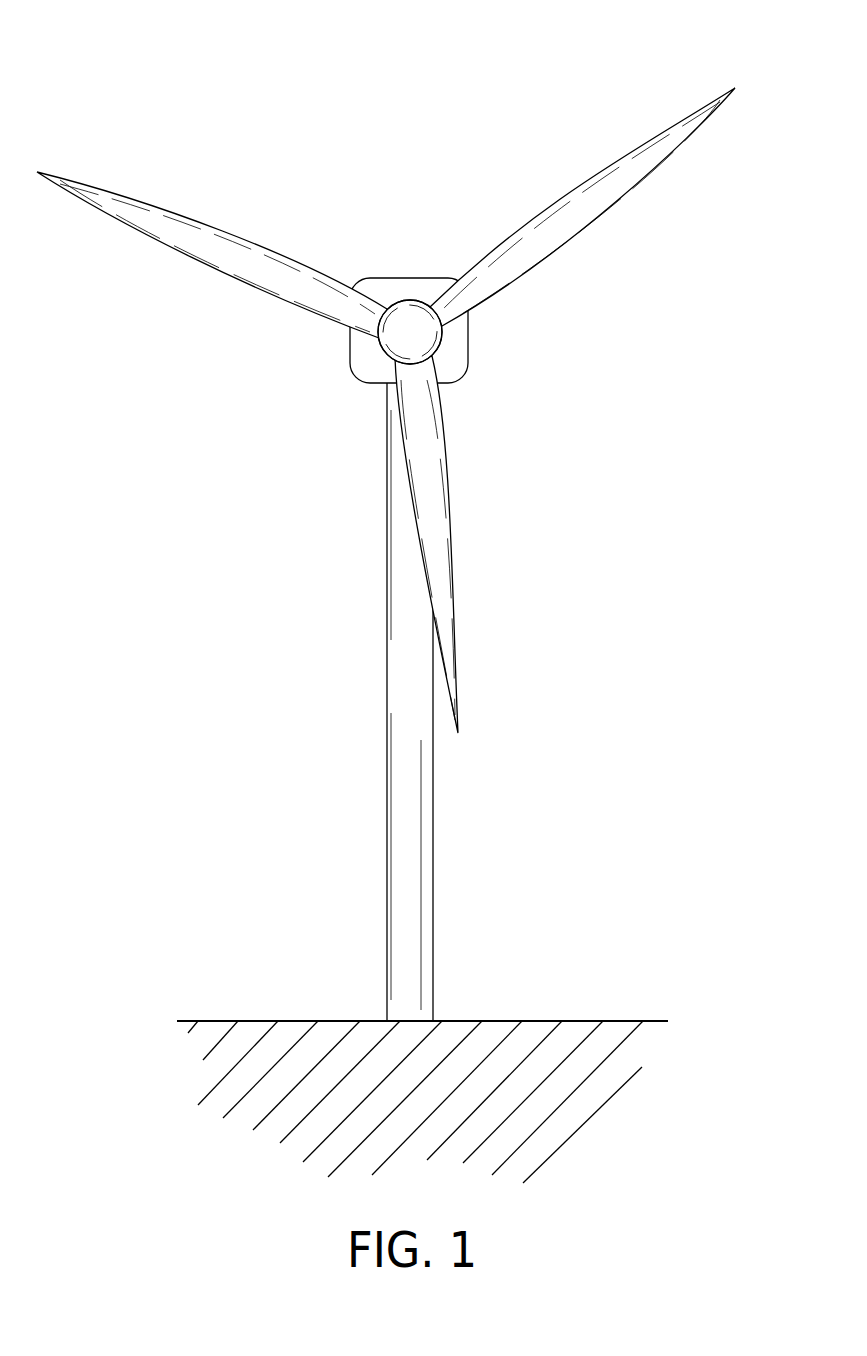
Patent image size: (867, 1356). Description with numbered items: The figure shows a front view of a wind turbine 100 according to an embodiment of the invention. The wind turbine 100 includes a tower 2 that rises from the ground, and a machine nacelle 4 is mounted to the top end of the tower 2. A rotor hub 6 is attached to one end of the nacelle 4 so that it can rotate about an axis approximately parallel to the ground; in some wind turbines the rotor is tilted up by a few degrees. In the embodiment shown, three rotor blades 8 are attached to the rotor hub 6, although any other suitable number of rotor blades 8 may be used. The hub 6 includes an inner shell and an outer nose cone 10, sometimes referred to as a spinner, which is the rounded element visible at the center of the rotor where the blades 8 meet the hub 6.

The wind turbine 100 is at (148, 97).
The tower 2 is at (412, 907).
The machine nacelle 4 is at (363, 360).
The rotor hub 6 is at (442, 340).
The rotor blades 8 is at (607, 205).
The outer nose cone 10 is at (407, 315).